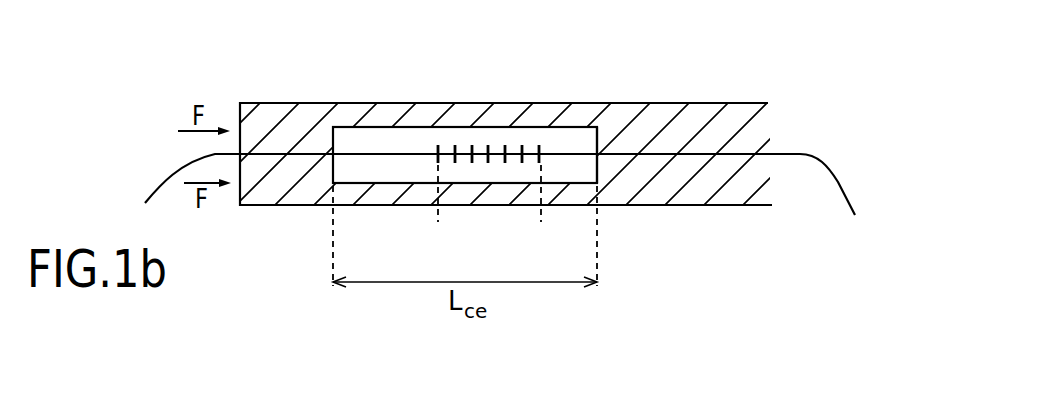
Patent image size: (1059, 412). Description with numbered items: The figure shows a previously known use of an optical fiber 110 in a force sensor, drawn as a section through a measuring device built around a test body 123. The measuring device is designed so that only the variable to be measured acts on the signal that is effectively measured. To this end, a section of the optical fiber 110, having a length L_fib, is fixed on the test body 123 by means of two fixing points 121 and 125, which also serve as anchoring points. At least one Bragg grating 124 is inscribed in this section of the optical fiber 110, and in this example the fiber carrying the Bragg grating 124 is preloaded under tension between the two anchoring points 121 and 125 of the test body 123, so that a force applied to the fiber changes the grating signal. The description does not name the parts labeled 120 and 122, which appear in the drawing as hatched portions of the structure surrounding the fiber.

The optical fiber 110 is at (157, 192).
The first body 120 is at (287, 188).
The fixing point 121 is at (340, 152).
The second body 122 is at (673, 190).
The test body 123 is at (632, 65).
The Bragg grating 124 is at (541, 227).
The fixing point 125 is at (597, 154).